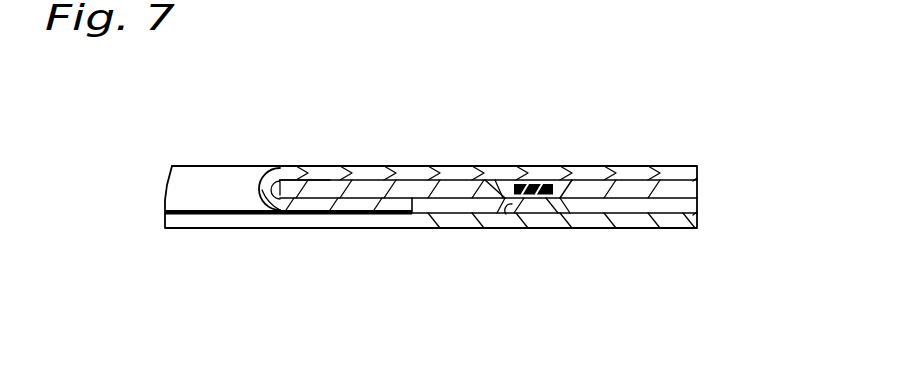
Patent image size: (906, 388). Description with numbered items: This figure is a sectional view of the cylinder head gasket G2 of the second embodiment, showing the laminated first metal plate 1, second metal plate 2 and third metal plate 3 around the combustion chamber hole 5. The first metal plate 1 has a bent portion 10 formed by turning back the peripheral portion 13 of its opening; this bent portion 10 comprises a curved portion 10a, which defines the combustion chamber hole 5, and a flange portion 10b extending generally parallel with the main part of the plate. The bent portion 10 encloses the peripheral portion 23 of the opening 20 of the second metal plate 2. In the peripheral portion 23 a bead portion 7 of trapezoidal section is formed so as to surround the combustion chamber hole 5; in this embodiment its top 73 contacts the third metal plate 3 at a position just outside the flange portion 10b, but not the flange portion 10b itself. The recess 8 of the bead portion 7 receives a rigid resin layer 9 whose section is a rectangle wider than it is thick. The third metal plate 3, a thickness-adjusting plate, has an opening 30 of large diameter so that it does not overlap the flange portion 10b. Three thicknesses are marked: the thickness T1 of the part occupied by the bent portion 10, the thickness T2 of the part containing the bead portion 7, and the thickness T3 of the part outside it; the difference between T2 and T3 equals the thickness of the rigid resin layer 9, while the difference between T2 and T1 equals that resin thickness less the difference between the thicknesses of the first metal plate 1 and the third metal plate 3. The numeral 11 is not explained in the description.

The cylinder head gasket G2 is at (688, 146).
The first metal plate 1 is at (698, 173).
The second metal plate 2 is at (698, 188).
The third metal plate 3 is at (698, 220).
The combustion chamber hole 5 is at (213, 170).
The opening 20 is at (270, 176).
The peripheral portion 23 is at (320, 182).
The bent portion 10 is at (285, 212).
The peripheral portion 13 is at (288, 273).
The curved portion 10a is at (257, 192).
The flange portion 10b is at (369, 214).
The opening 30 is at (406, 228).
The rigid resin layer 9 is at (542, 180).
The opening 11 is at (500, 180).
The recess 8 is at (563, 178).
The bead portion 7 is at (572, 212).
The top 73 is at (507, 215).
The thickness T1 is at (336, 127).
The thickness T2 is at (533, 122).
The thickness T3 is at (639, 123).